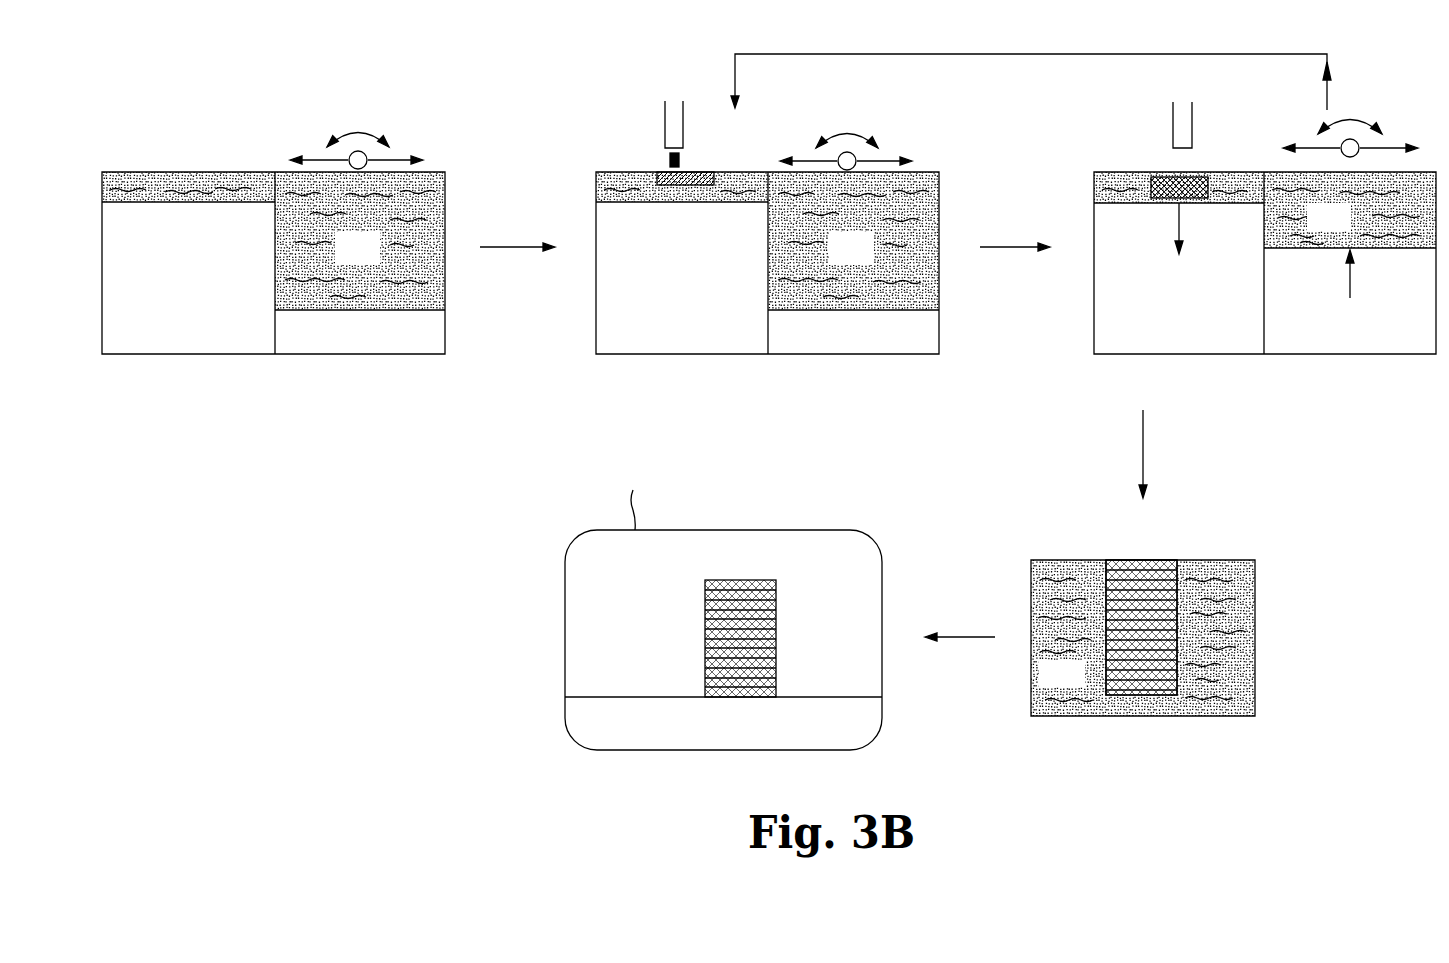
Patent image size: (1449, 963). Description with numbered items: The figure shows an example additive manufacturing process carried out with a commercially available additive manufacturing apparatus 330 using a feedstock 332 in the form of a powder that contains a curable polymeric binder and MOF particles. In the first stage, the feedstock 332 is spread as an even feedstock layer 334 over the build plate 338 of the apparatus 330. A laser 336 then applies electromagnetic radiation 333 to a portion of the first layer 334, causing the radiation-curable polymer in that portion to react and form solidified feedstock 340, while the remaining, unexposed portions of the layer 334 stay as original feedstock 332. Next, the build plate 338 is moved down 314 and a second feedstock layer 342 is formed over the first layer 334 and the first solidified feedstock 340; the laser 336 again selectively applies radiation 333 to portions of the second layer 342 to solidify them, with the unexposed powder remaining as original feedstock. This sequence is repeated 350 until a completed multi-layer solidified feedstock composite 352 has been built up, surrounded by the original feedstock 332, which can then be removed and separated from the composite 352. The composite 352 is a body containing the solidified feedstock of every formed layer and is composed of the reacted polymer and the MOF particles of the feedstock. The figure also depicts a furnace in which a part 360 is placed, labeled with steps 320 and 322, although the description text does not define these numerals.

The additive manufacturing apparatus 330 is at (176, 80).
The feedstock 332 is at (374, 261).
The electromagnetic radiation 333 is at (680, 157).
The feedstock layer 334 is at (242, 193).
The laser 336 is at (672, 114).
The build plate 338 is at (165, 203).
The solidified feedstock 340 is at (657, 172).
The second feedstock layer 342 is at (1094, 188).
The repeated sequence 350 is at (1031, 67).
The downward movement of build plate 314 is at (1206, 229).
The multi-layer solidified feedstock composite 352 is at (1160, 585).
The sintered part in furnace 360 is at (757, 626).
The debinding step 320 is at (723, 625).
The sintering step 322 is at (723, 723).